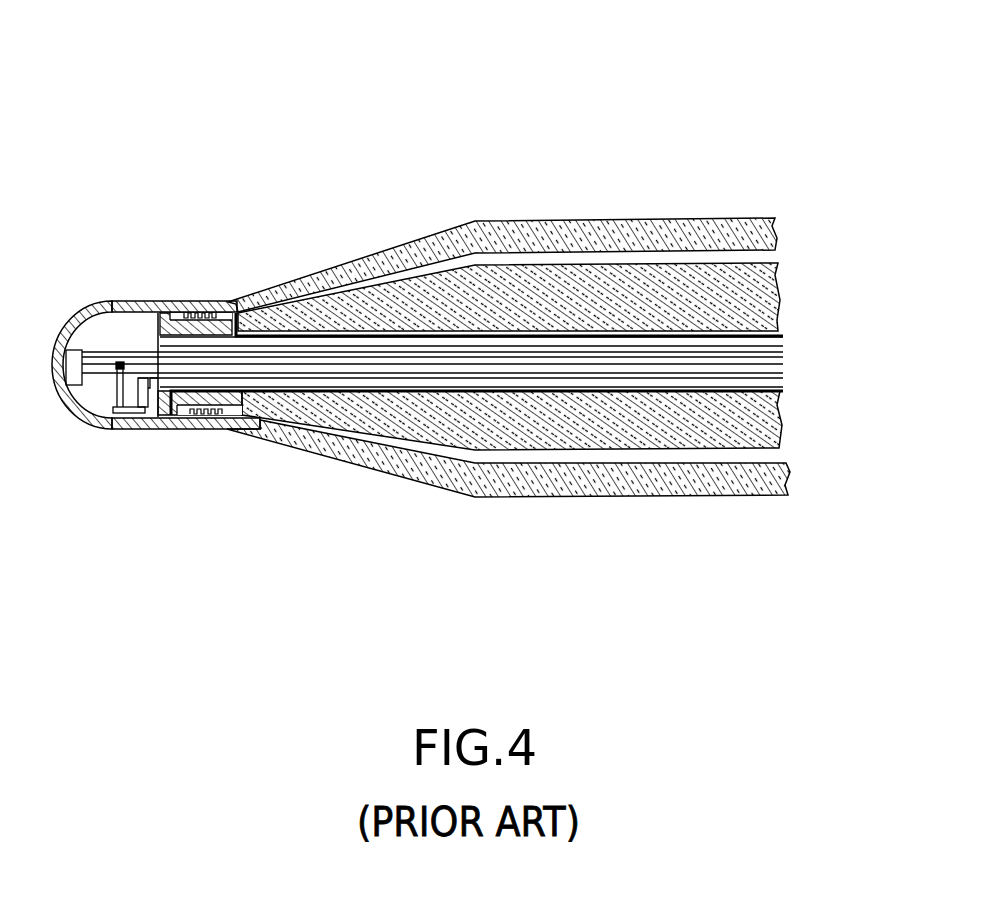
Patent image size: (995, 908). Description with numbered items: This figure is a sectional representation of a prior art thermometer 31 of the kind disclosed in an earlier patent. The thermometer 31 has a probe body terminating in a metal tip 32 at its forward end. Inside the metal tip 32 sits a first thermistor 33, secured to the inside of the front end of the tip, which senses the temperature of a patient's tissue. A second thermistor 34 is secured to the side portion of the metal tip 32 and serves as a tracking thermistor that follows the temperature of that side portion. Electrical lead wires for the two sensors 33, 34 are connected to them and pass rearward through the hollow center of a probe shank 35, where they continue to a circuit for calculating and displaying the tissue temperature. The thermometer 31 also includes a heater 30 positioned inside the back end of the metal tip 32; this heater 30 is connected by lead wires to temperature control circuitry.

The heater 30 is at (213, 307).
The thermometer 31 is at (486, 182).
The metal tip 32 is at (147, 300).
The first thermistor 33 is at (82, 423).
The second thermistor 34 is at (140, 430).
The probe shank 35 is at (603, 290).